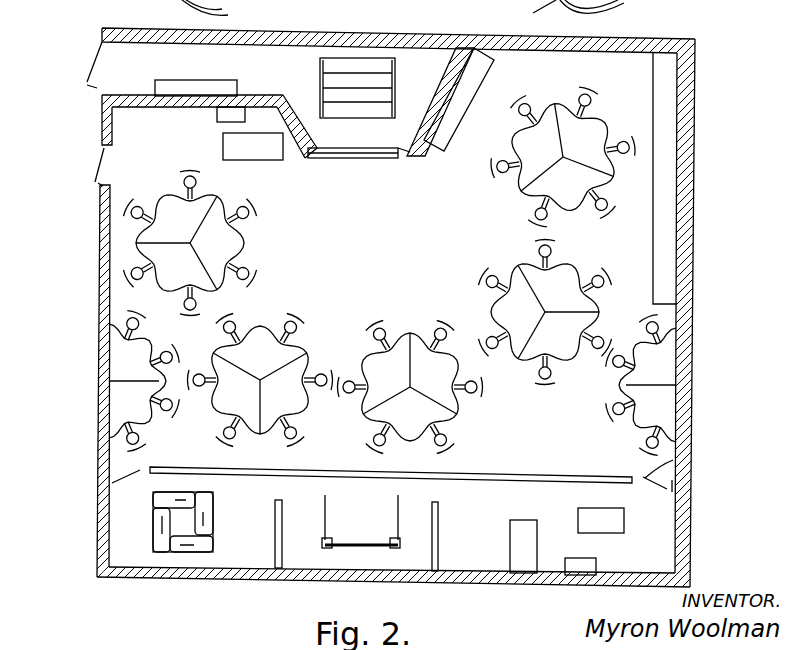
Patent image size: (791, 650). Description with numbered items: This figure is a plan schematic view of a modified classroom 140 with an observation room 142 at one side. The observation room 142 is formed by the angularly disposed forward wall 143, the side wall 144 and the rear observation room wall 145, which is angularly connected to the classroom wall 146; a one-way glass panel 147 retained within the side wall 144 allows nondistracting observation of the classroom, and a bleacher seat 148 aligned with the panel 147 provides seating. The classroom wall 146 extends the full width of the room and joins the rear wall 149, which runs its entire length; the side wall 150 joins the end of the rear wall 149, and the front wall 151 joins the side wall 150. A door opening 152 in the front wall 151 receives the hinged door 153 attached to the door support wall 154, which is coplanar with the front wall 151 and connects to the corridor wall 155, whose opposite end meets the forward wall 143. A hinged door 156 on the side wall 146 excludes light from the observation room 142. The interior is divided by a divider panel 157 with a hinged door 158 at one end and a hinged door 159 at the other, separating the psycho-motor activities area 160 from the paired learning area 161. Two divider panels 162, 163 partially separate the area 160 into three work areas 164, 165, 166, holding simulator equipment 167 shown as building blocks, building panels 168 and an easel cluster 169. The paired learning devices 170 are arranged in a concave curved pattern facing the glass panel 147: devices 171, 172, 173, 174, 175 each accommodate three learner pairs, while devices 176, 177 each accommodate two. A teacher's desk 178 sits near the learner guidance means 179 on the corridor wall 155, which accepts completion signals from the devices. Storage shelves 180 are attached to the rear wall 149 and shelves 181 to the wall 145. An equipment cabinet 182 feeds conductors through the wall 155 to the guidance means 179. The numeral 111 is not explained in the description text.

The adjacent figure element 111 is at (530, 11).
The classroom 140 is at (418, 307).
The observation room 142 is at (395, 128).
The forward wall 143 is at (297, 103).
The side wall 144 is at (310, 157).
The rear observation room wall 145 is at (445, 88).
The classroom wall 146 is at (118, 28).
The one-way glass panel 147 is at (355, 155).
The bleacher seat 148 is at (345, 98).
The rear wall 149 is at (693, 128).
The side wall 150 is at (225, 578).
The front wall 151 is at (103, 491).
The door opening 152 is at (98, 185).
The hinged door 153 is at (100, 163).
The door support wall 154 is at (102, 118).
The corridor wall 155 is at (127, 94).
The hinged door 156 is at (93, 58).
The divider panel 157 is at (528, 473).
The hinged door 158 is at (140, 473).
The hinged door 159 is at (688, 458).
The psycho-motor activities area 160 is at (127, 497).
The paired learning area 161 is at (180, 328).
The divider panel 162 is at (282, 517).
The divider panel 163 is at (440, 520).
The work area 164 is at (485, 545).
The work area 165 is at (303, 543).
The work area 166 is at (120, 540).
The simulator equipment 167 is at (590, 518).
The building panels 168 is at (398, 512).
The easel cluster 169 is at (180, 490).
The paired learning devices 170 is at (263, 253).
The paired learning device 171 is at (170, 212).
The paired learning device 172 is at (283, 348).
The paired learning device 173 is at (402, 333).
The paired learning device 174 is at (510, 275).
The paired learning device 175 is at (528, 168).
The paired learner device 176 is at (122, 360).
The paired learner device 177 is at (643, 422).
The teacher's desk 178 is at (230, 147).
The learner guidance means 179 is at (217, 118).
The storage shelves 180 is at (657, 252).
The shelves 181 is at (473, 85).
The equipment cabinet 182 is at (200, 80).